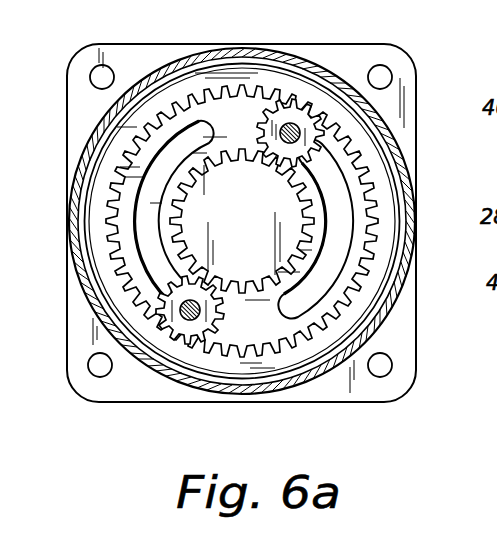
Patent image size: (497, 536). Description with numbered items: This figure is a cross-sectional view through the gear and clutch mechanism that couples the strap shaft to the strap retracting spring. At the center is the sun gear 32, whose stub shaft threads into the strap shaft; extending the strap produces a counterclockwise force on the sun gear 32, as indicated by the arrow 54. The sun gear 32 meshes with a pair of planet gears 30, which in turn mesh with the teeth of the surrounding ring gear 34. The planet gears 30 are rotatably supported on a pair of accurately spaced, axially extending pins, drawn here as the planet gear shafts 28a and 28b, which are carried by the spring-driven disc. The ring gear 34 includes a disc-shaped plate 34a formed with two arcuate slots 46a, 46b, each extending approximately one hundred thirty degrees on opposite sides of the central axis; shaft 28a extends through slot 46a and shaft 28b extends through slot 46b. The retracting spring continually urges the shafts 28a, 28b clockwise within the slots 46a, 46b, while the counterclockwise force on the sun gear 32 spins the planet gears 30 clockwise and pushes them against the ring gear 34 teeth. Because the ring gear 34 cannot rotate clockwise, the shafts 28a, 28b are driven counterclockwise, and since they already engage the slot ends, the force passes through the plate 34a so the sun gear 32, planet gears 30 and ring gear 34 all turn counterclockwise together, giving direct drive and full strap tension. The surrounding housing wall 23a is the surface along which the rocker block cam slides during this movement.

The housing wall 23a is at (247, 63).
The ring gear 34 is at (177, 82).
The disc-shaped plate 34a is at (226, 111).
The arcuate slot 46a is at (140, 181).
The arcuate slot 46b is at (328, 178).
The planet gear shaft 28b is at (242, 221).
The arrow 54 is at (196, 238).
The sun gear 32 is at (261, 263).
The planet gears 30 is at (303, 104).
The planet gear shaft 28a is at (190, 300).